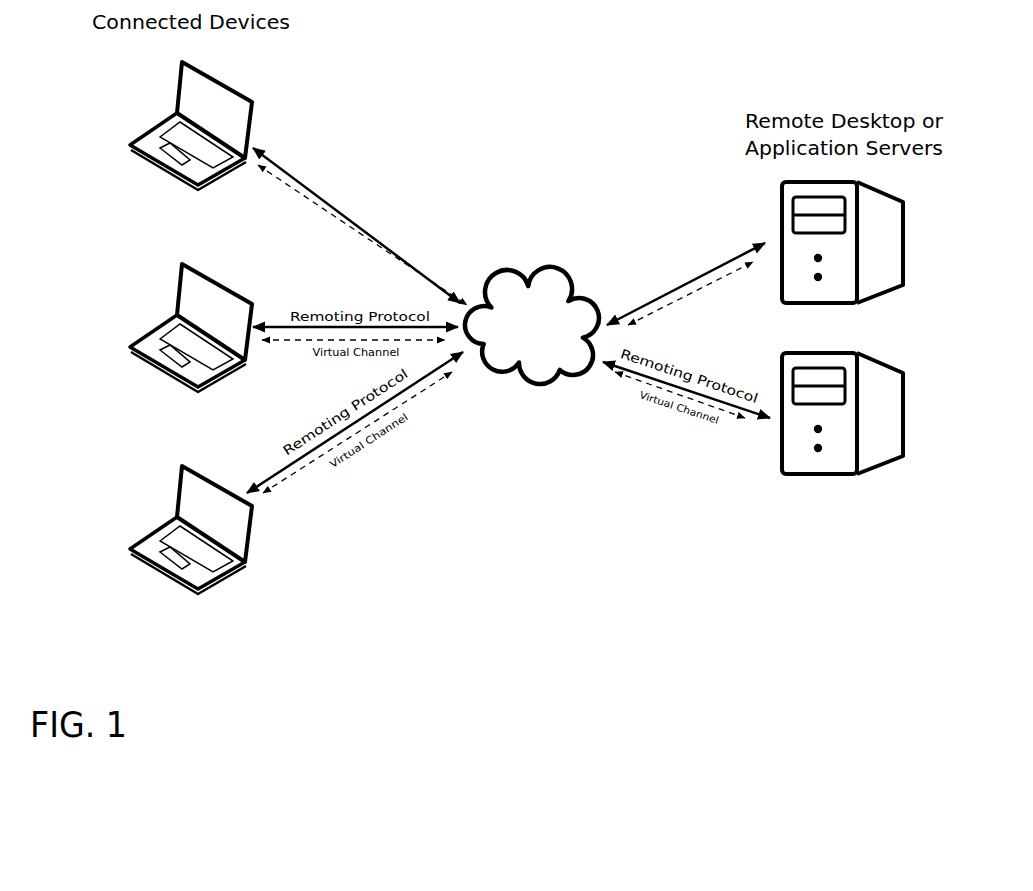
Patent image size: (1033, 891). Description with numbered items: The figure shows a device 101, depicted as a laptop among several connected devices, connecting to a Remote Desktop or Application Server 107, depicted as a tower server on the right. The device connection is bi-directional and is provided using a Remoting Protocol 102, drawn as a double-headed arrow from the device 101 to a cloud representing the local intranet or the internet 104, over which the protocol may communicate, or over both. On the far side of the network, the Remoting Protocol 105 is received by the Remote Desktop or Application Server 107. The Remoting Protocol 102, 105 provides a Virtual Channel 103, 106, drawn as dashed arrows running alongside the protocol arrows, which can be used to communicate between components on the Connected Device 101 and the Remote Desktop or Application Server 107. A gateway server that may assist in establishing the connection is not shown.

The device 101 is at (191, 126).
The Remoting Protocol 102 is at (356, 225).
The Virtual Channel 103 is at (362, 235).
The local intranet or the internet 104 is at (532, 313).
The Remoting Protocol 105 is at (686, 278).
The Virtual Channel 106 is at (690, 302).
The Remote Desktop or Application Server 107 is at (867, 242).